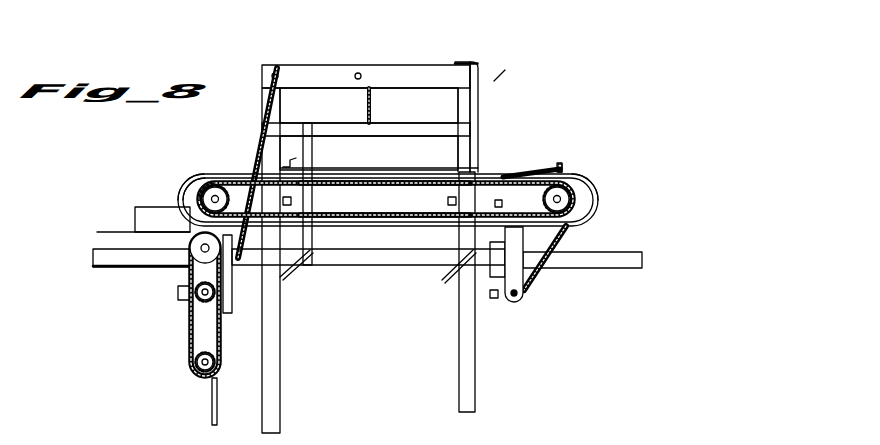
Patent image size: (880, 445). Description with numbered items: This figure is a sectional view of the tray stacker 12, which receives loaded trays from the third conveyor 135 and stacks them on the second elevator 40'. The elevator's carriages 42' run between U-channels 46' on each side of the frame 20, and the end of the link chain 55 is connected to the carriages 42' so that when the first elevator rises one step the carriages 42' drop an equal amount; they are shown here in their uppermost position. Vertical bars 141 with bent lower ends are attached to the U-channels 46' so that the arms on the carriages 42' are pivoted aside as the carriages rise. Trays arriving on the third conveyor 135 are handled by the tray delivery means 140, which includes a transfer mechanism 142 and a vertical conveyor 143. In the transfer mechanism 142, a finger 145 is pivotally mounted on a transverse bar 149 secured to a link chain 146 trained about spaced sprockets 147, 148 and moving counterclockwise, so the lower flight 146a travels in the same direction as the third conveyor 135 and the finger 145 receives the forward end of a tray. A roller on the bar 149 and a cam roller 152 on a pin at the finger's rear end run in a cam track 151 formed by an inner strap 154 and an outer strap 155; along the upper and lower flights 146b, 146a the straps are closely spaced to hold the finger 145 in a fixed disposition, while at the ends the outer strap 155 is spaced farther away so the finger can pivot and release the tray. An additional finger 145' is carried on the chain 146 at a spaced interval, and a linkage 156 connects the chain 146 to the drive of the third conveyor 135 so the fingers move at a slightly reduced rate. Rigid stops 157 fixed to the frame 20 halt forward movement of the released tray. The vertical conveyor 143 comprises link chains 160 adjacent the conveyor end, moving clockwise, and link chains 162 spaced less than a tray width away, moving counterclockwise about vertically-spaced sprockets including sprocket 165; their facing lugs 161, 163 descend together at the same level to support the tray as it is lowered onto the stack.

The tray stacker 12 is at (511, 58).
The frame 20 is at (628, 250).
The second elevator 40' is at (501, 117).
The carriages 42' is at (366, 112).
The U-channels 46' is at (368, 260).
The link chain 55 is at (370, 96).
The third conveyor 135 is at (97, 232).
The tray delivery means 140 is at (520, 152).
The vertical bars 141 is at (478, 168).
The transfer mechanism 142 is at (603, 170).
The vertical conveyor 143 is at (527, 298).
The finger 145 is at (368, 269).
The additional finger 145' is at (617, 141).
The link chain 146 is at (200, 189).
The lower flight 146a is at (317, 212).
The upper flight 146b is at (377, 180).
The sprocket 147 is at (203, 200).
The sprocket 148 is at (572, 199).
The transverse bar 149 is at (389, 235).
The cam track 151 is at (222, 139).
The cam roller 152 is at (412, 233).
The inner strap 154 is at (198, 182).
The outer strap 155 is at (198, 172).
The linkage 156 is at (190, 342).
The rigid stops 157 is at (493, 270).
The link chains 160 is at (190, 275).
The lugs 161 is at (222, 292).
The link chains 162 is at (525, 283).
The lugs 163 is at (497, 292).
The sprocket 165 is at (195, 365).